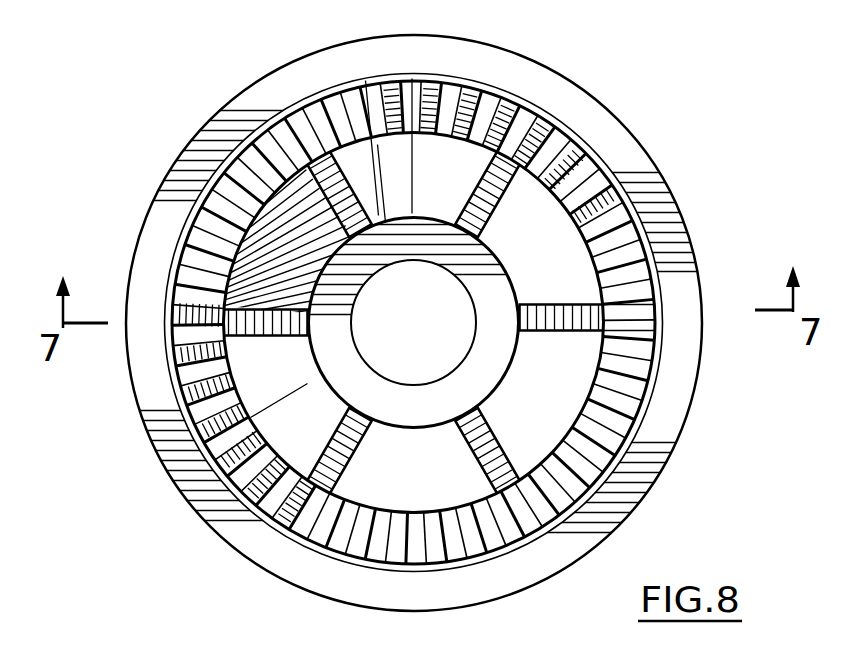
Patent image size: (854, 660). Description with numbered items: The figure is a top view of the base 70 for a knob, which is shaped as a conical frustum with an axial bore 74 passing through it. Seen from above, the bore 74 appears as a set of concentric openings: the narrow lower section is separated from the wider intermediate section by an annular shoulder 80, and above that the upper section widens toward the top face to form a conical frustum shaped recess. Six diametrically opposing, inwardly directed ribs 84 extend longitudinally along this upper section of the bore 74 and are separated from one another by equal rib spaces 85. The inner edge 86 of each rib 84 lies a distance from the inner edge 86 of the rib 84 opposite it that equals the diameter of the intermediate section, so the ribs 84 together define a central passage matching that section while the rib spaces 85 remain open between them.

The base 70 is at (140, 440).
The axial bore 74 is at (414, 288).
The annular shoulder 80 is at (423, 414).
The ribs 84 is at (513, 453).
The rib spaces 85 is at (405, 490).
The inner edge 86 is at (472, 420).